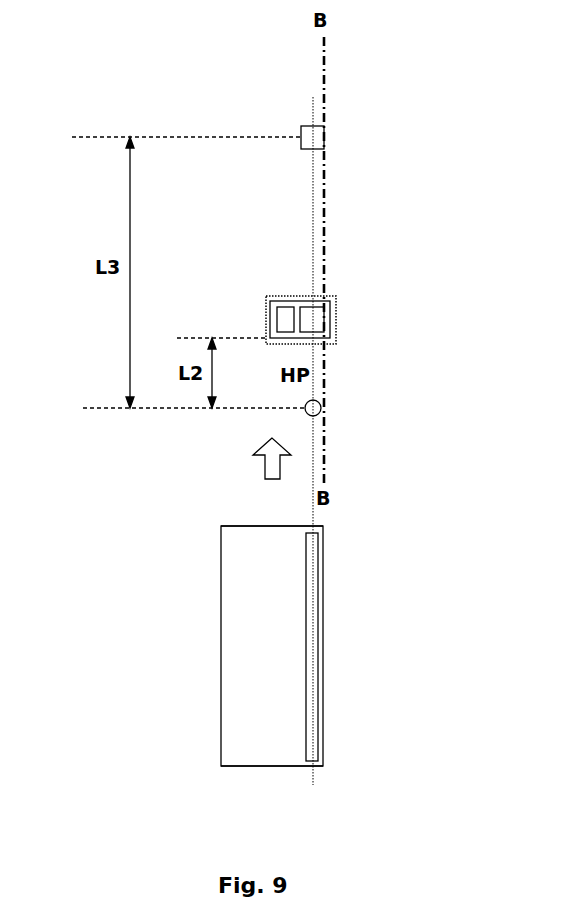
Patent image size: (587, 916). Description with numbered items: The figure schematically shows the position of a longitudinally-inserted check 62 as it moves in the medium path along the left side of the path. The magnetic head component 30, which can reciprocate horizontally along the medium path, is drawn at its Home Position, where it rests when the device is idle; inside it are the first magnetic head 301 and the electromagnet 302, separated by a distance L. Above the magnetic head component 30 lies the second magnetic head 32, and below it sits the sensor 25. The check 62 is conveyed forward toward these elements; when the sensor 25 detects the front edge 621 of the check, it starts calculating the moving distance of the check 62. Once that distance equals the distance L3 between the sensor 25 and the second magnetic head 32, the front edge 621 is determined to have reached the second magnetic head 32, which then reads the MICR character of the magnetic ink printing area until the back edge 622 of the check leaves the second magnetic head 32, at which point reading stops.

The second magnetic head 32 is at (324, 141).
The magnetic head component 30 is at (328, 325).
The first magnetic head 301 is at (287, 307).
The electromagnet 302 is at (325, 313).
The sensor 25 is at (321, 404).
The check 62 is at (221, 636).
The front edge of the check 621 is at (247, 526).
The back edge of the check 622 is at (242, 766).